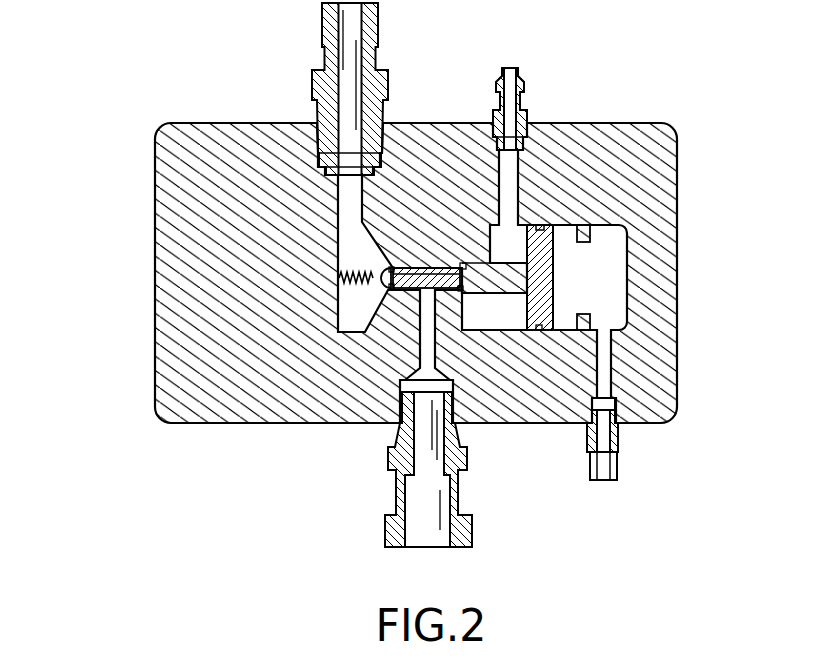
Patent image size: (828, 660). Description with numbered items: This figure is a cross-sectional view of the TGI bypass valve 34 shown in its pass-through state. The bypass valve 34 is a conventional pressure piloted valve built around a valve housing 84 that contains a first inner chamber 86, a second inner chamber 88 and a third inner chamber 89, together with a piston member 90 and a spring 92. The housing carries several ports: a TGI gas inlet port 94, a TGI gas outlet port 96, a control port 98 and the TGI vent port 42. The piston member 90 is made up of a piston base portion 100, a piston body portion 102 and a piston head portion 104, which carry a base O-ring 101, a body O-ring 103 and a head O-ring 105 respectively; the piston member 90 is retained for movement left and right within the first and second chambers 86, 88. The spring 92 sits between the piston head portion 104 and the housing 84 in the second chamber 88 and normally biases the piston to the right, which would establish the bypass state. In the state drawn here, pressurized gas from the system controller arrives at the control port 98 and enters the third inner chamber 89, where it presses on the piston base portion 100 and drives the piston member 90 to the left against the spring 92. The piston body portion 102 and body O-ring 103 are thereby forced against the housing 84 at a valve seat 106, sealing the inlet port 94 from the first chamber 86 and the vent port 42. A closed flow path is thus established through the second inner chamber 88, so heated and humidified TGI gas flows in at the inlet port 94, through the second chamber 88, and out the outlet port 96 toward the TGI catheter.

The TGI bypass valve 34 is at (142, 334).
The TGI vent port 42 is at (508, 78).
The valve housing 84 is at (165, 162).
The first inner chamber 86 is at (514, 238).
The second inner chamber 88 is at (345, 248).
The third inner chamber 89 is at (617, 302).
The piston member 90 is at (574, 267).
The spring 92 is at (352, 285).
The TGI gas inlet port 94 is at (437, 548).
The TGI gas outlet port 96 is at (351, 45).
The control port 98 is at (603, 482).
The piston base portion 100 is at (541, 333).
The base O-ring 101 is at (541, 232).
The piston body portion 102 is at (487, 272).
The body O-ring 103 is at (463, 266).
The piston head portion 104 is at (385, 286).
The head O-ring 105 is at (388, 267).
The valve seat 106 is at (461, 266).